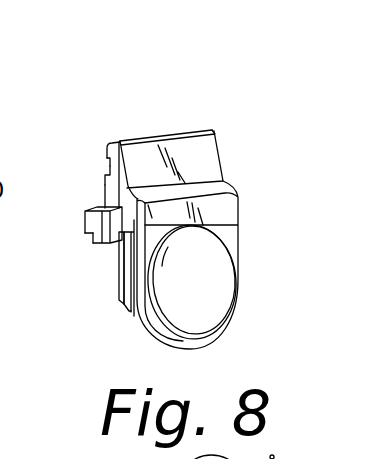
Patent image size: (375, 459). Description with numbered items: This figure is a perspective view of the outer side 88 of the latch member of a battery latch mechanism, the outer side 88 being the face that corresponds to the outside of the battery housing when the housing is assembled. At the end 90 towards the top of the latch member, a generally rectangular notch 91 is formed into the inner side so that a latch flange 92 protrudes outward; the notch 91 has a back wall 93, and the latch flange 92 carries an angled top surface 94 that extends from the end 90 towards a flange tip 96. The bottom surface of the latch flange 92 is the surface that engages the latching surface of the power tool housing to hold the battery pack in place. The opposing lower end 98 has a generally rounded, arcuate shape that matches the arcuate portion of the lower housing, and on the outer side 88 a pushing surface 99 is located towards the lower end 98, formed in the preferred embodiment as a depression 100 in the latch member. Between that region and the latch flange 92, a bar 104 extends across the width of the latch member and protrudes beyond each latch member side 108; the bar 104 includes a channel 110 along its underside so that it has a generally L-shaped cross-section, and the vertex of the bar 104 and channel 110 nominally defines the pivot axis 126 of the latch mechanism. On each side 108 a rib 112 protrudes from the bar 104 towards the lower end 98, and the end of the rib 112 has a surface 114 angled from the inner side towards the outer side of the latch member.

The outer side 88 is at (224, 207).
The end 90 is at (182, 134).
The notch 91 is at (110, 177).
The latch flange 92 is at (115, 142).
The back wall 93 is at (110, 165).
The angled top surface 94 is at (110, 144).
The flange tip 96 is at (107, 155).
The lower end 98 is at (180, 347).
The pushing surface 99 is at (207, 278).
The depression 100 is at (208, 305).
The bar 104 is at (90, 222).
The latch member side 108 is at (127, 310).
The channel 110 is at (85, 235).
The rib 112 is at (120, 258).
The surface 114 is at (118, 287).
The pivot axis 126 is at (92, 237).